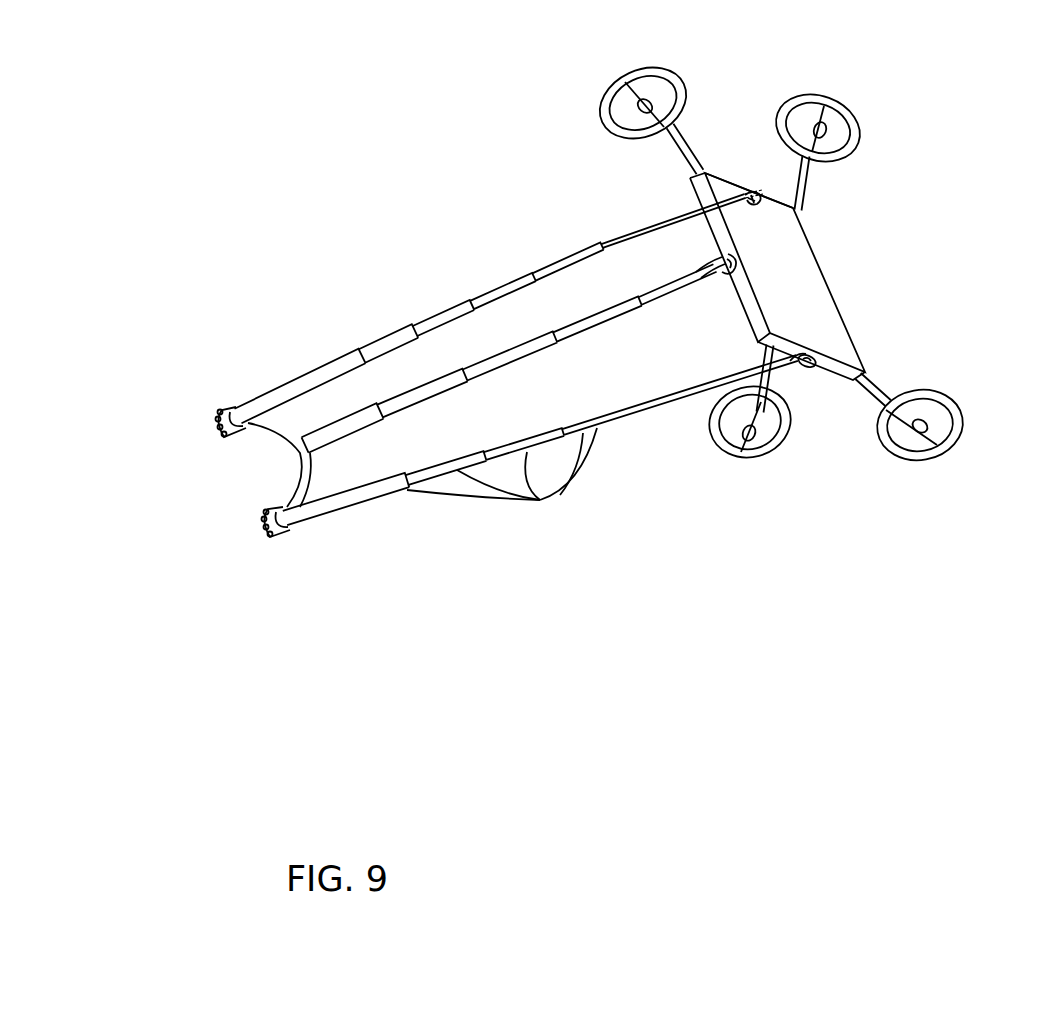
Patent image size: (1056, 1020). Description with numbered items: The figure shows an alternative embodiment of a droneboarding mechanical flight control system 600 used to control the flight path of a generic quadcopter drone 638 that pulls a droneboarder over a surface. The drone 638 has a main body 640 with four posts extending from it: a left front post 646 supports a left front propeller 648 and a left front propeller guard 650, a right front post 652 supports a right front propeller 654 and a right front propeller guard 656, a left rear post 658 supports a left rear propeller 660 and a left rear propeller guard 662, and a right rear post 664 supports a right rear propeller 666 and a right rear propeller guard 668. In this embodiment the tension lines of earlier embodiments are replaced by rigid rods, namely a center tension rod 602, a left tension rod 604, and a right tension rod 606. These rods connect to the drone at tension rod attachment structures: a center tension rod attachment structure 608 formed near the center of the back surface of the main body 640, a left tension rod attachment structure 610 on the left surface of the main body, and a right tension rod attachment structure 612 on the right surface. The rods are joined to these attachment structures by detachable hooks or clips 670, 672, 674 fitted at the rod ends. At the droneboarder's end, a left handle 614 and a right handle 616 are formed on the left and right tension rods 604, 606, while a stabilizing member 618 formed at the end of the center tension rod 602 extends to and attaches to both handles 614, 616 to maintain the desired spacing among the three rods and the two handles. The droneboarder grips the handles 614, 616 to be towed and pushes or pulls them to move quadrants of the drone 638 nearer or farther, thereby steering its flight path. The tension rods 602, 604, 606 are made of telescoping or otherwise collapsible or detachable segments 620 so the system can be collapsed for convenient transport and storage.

The droneboarding mechanical flight control system 600 is at (267, 175).
The center tension rod 602 is at (416, 388).
The left tension rod 604 is at (304, 350).
The right tension rod 606 is at (338, 521).
The center tension rod attachment structure 608 is at (723, 278).
The left tension rod attachment structure 610 is at (755, 188).
The right tension rod attachment structure 612 is at (813, 372).
The left handle 614 is at (215, 421).
The right handle 616 is at (265, 540).
The stabilizing member 618 is at (318, 467).
The collapsible or detachable segments 620 is at (502, 480).
The quadcopter drone 638 is at (822, 563).
The main body 640 is at (840, 282).
The left front post 646 is at (814, 201).
The left front propeller 648 is at (846, 134).
The left front propeller guard 650 is at (801, 95).
The right front post 652 is at (880, 384).
The right front propeller 654 is at (931, 446).
The right front propeller guard 656 is at (946, 402).
The left rear post 658 is at (672, 150).
The left rear propeller 660 is at (652, 71).
The left rear propeller guard 662 is at (606, 79).
The right rear post 664 is at (790, 422).
The right rear propeller 666 is at (752, 440).
The right rear propeller guard 668 is at (716, 428).
The detachable hook or clip 670 is at (706, 278).
The detachable hook or clip 672 is at (753, 206).
The detachable hook or clip 674 is at (803, 352).